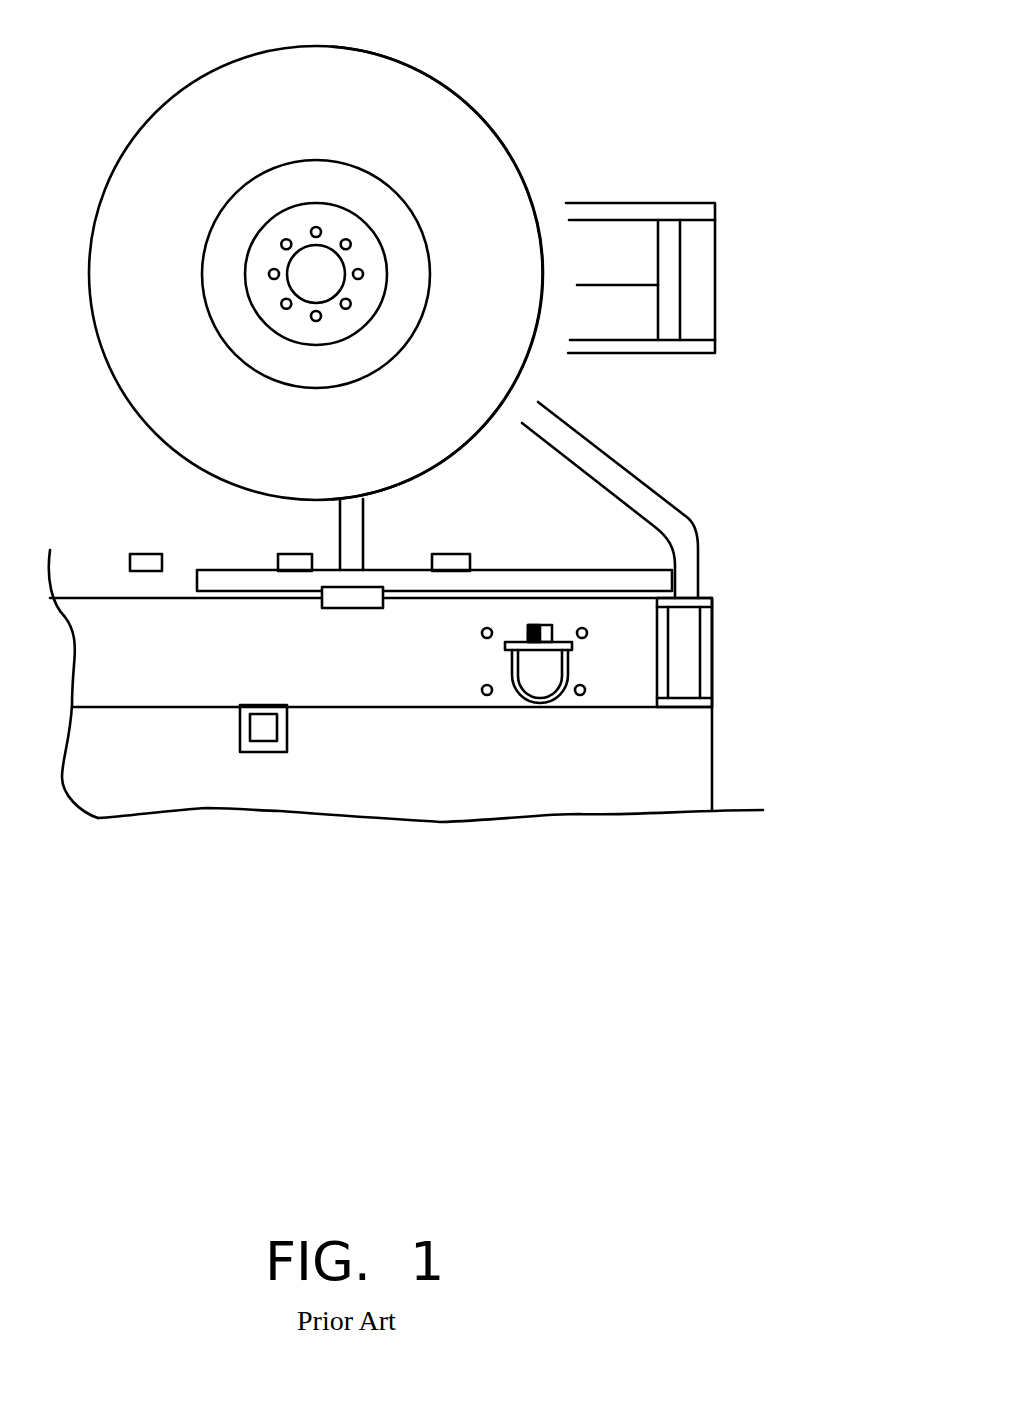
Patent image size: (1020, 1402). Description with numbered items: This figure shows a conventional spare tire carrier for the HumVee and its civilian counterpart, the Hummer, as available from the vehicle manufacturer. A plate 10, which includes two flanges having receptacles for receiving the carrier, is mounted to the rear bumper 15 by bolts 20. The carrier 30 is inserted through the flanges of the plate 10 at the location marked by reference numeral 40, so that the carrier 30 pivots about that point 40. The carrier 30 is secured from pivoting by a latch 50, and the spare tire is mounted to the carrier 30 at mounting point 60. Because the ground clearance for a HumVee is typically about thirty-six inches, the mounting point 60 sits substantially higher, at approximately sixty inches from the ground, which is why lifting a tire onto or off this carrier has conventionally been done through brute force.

The plate 10 is at (675, 683).
The rear bumper 15 is at (417, 658).
The bolts 20 is at (572, 700).
The carrier 30 is at (632, 485).
The pivot point 40 is at (700, 595).
The latch 50 is at (330, 608).
The mounting point 60 is at (325, 257).